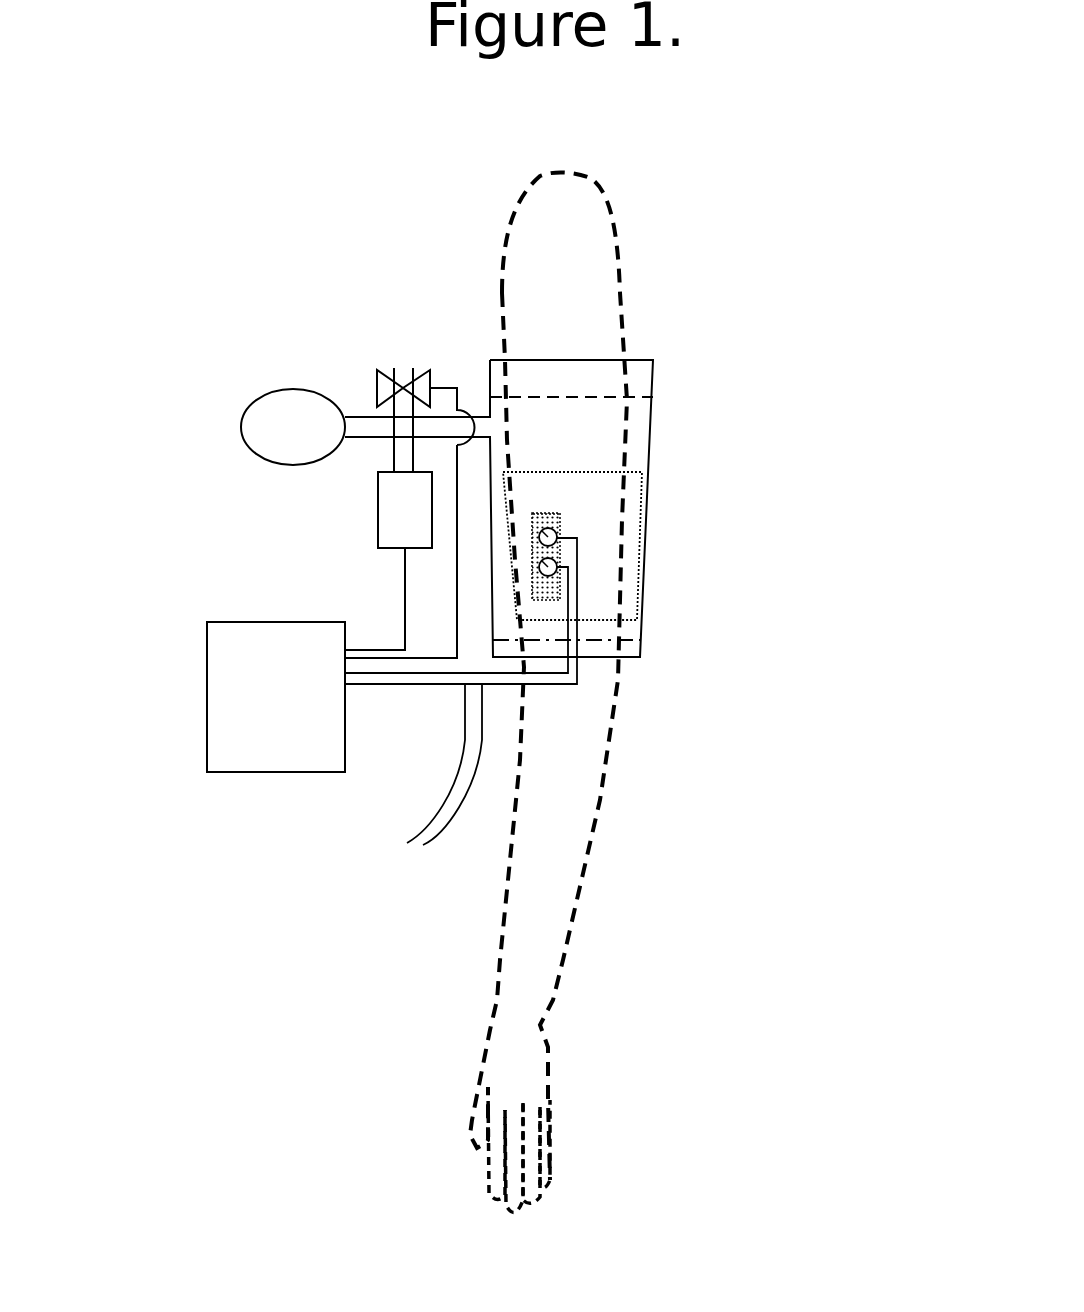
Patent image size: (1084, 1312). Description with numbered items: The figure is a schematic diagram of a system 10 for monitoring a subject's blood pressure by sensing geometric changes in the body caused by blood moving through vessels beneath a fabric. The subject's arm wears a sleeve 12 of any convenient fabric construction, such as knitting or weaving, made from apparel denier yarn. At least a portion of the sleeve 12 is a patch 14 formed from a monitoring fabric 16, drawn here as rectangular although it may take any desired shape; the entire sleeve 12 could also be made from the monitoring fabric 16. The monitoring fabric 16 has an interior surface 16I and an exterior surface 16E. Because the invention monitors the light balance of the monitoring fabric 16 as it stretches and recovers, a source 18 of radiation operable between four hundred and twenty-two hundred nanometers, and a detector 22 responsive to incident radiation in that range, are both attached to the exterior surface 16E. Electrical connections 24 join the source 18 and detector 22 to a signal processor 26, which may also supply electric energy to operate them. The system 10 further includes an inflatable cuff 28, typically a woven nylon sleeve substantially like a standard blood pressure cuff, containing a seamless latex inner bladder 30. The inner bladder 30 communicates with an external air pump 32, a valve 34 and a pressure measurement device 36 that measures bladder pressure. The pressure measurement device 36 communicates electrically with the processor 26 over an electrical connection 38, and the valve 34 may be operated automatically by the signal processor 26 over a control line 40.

The system 10 is at (445, 248).
The sleeve 12 is at (533, 487).
The patch 14 is at (553, 510).
The monitoring fabric 16 is at (557, 515).
The interior surface 16I is at (560, 518).
The exterior surface 16E is at (560, 534).
The source of radiation 18 is at (562, 576).
The detector 22 is at (558, 544).
The electrical connections 24 is at (407, 843).
The signal processor 26 is at (257, 658).
The inflatable cuff 28 is at (593, 413).
The inner bladder 30 is at (533, 397).
The external air pump 32 is at (277, 390).
The valve 34 is at (403, 365).
The pressure measurement device 36 is at (412, 510).
The electrical connection 38 is at (405, 565).
The control line 40 is at (457, 620).